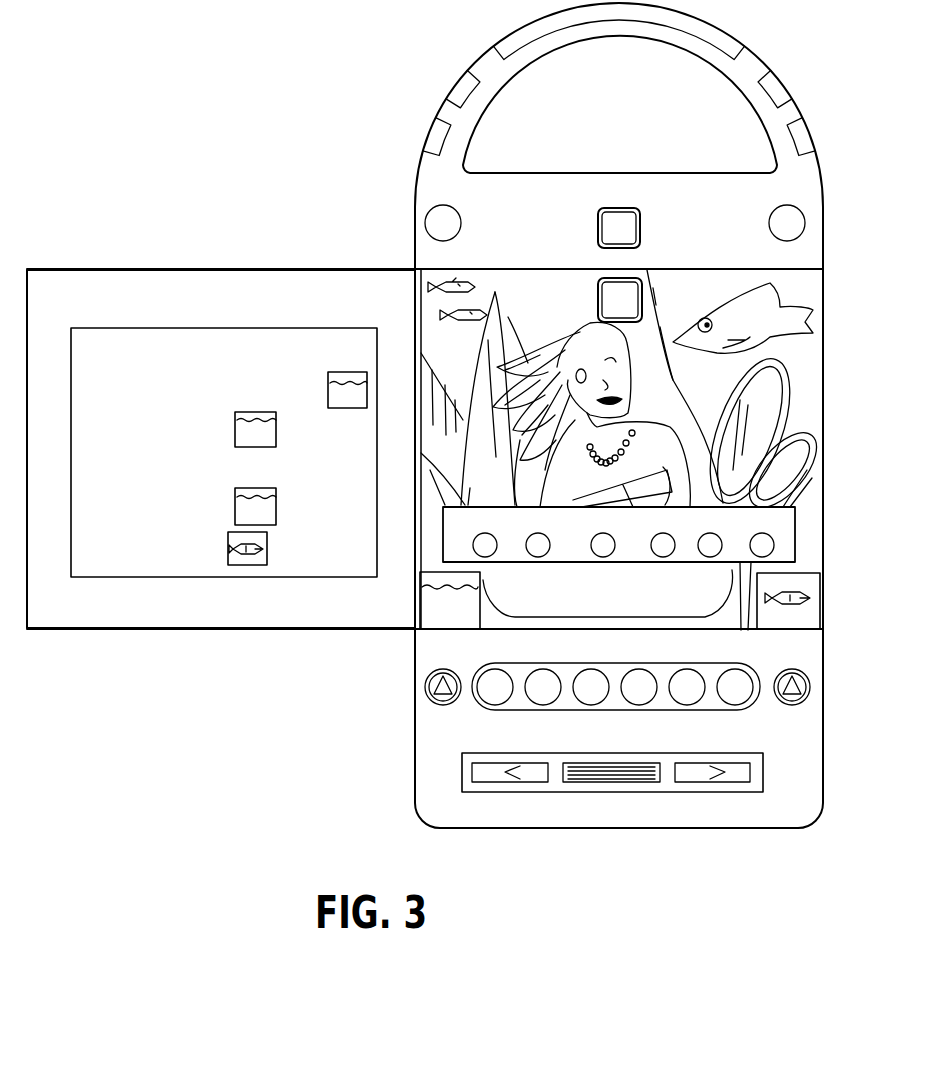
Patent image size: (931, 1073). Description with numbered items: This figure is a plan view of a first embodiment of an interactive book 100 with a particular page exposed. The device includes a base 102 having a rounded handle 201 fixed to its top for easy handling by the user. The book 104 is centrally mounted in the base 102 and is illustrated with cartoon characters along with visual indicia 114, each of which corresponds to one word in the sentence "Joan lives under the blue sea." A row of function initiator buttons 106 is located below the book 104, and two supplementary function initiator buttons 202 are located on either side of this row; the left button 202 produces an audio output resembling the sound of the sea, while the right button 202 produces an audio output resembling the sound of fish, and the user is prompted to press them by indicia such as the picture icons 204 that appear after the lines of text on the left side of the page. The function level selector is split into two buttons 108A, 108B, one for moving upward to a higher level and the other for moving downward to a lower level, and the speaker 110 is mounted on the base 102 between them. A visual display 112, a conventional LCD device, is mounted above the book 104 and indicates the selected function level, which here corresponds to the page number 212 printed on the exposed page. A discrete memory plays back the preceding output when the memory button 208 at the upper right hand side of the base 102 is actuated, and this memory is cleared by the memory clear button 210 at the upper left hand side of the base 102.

The interactive book 100 is at (391, 156).
The base 102 is at (413, 752).
The book 104 is at (155, 270).
The function initiator buttons 106 is at (503, 705).
The function level selector button 108A is at (470, 778).
The function level selector button 108B is at (745, 780).
The speaker 110 is at (562, 785).
The visual display 112 is at (640, 214).
The visual indicia 114 is at (542, 557).
The rounded handle 201 is at (505, 34).
The supplementary function initiator buttons 202 is at (429, 687).
The picture icons 204 is at (346, 408).
The memory button 208 is at (778, 212).
The memory clear button 210 is at (448, 212).
The page number / visual indicia 212 is at (598, 301).